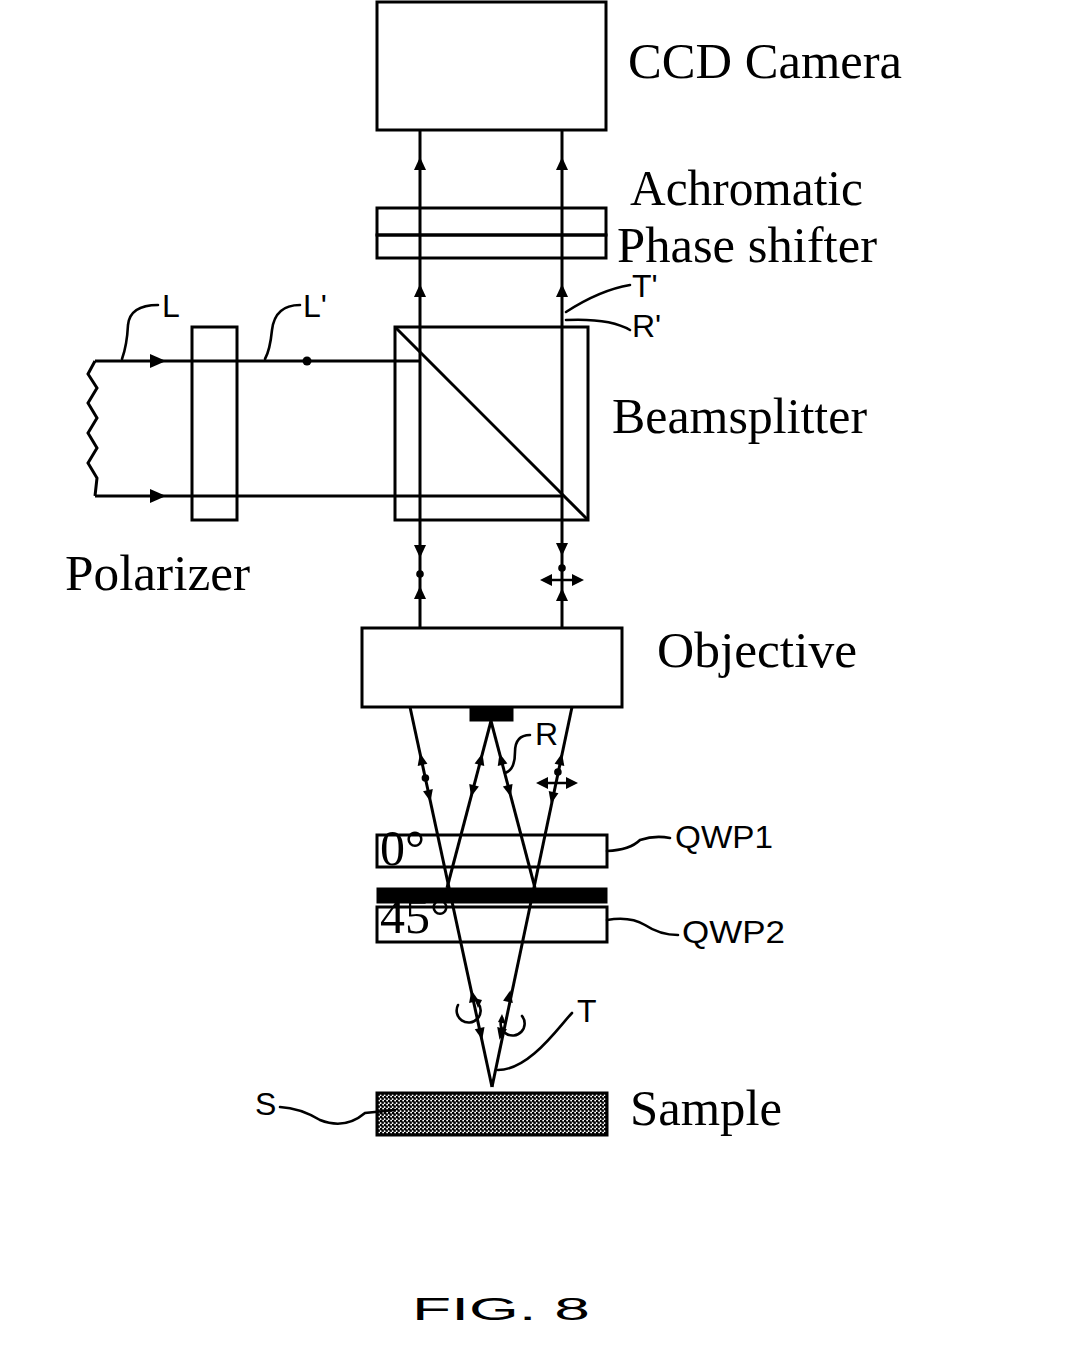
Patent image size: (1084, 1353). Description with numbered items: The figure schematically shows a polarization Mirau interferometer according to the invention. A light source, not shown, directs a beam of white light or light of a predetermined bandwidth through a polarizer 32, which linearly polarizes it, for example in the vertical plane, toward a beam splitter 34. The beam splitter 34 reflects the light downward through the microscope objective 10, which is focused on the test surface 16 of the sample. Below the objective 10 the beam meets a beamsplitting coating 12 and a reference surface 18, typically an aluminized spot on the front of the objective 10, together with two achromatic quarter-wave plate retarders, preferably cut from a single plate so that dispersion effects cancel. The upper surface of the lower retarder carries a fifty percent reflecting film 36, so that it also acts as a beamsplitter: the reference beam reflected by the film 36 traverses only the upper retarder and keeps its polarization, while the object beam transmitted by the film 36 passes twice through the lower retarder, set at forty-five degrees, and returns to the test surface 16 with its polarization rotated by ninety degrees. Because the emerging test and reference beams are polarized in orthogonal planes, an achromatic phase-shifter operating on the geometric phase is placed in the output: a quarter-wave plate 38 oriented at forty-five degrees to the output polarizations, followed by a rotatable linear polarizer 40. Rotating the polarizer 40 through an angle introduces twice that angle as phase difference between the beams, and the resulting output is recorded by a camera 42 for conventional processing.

The camera 42 is at (606, 86).
The rotatable linear polarizer 40 is at (396, 228).
The quarter-wave plate 38 is at (404, 246).
The polarizer 32 is at (207, 345).
The beam splitter 34 is at (588, 386).
The microscope objective 10 is at (598, 677).
The beamsplitting coating 12 is at (600, 709).
The reference surface 18 is at (485, 722).
The 50 percent reflecting film 36 is at (568, 887).
The test surface 16 is at (567, 1093).